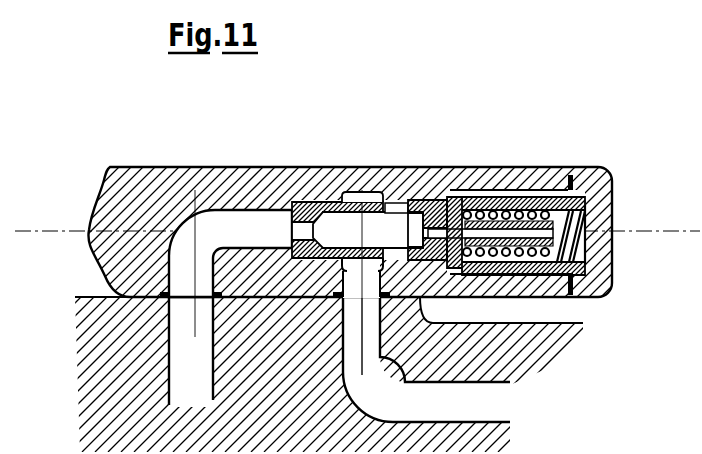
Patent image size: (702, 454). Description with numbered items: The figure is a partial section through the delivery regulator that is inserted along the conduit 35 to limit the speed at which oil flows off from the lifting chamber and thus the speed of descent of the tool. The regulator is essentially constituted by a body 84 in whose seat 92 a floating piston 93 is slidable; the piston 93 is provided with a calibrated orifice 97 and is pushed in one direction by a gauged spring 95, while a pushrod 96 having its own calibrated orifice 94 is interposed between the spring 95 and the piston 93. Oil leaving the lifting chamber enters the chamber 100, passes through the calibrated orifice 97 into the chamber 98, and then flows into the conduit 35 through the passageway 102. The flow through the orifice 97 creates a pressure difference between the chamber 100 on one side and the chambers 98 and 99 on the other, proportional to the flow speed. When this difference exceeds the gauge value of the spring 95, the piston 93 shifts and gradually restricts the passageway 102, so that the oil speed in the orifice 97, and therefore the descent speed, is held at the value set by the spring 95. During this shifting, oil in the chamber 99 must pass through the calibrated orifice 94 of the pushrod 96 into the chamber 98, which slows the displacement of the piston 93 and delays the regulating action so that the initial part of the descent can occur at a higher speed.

The conduit 35 is at (173, 375).
The body 84 is at (237, 183).
The chamber 100 is at (195, 190).
The calibrated orifice 97 is at (292, 193).
The floating piston 93 is at (327, 202).
The chamber 98 is at (347, 192).
The passageway 102 is at (381, 193).
The seat 92 is at (402, 212).
The calibrated orifice 94 is at (445, 210).
The pushrod 96 is at (462, 200).
The chamber 99 is at (488, 196).
The gauged spring 95 is at (545, 212).